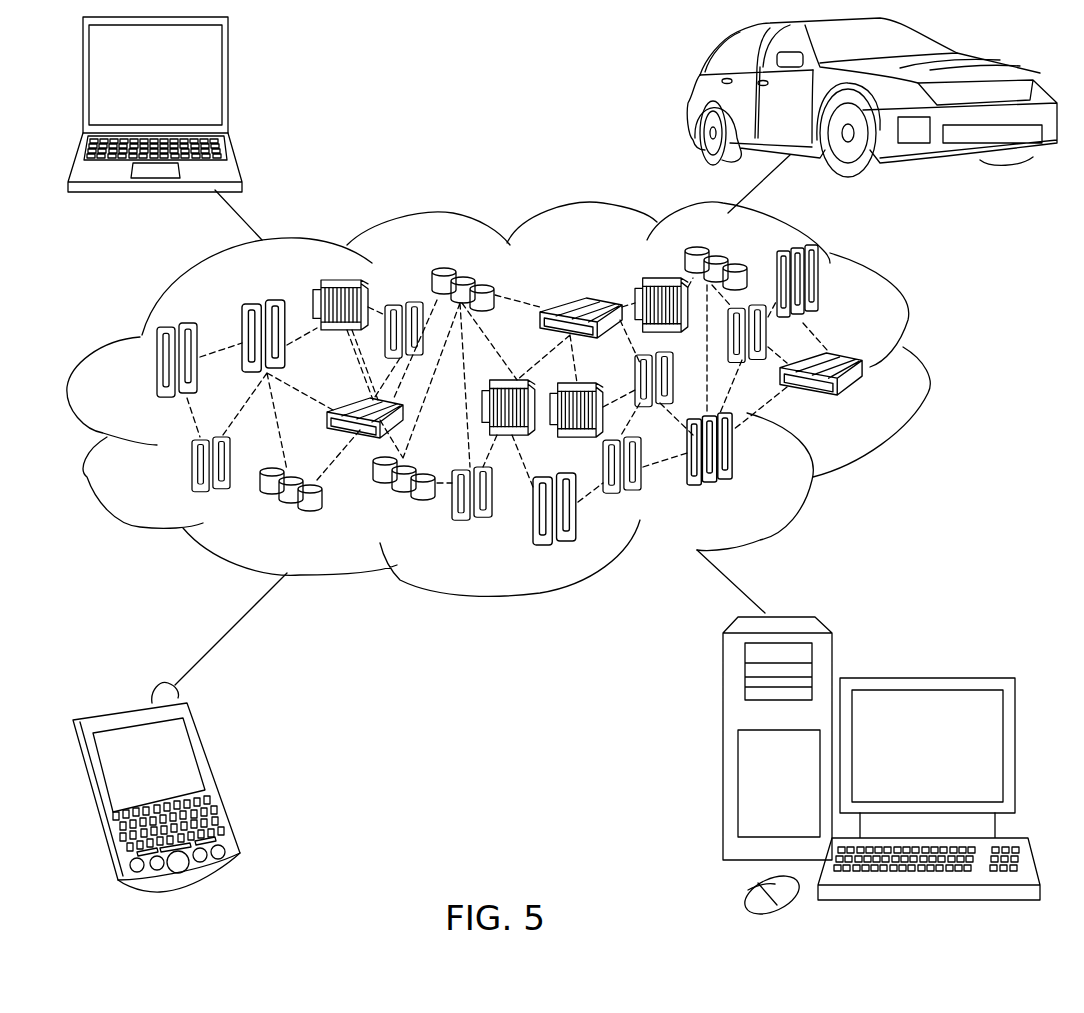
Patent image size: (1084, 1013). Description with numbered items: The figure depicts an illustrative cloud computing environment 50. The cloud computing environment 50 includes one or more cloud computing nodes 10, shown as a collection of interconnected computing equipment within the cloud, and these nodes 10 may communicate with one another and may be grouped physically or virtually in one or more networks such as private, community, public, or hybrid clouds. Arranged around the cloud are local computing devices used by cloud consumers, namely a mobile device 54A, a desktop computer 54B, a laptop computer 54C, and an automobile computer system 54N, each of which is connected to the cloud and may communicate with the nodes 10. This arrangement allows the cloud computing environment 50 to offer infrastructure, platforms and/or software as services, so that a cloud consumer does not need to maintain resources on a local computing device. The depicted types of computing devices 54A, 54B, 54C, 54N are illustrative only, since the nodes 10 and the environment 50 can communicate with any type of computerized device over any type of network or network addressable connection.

The cloud computing nodes 10 is at (870, 404).
The cloud computing environment 50 is at (923, 373).
The mobile device 54A is at (217, 777).
The desktop computer 54B is at (927, 677).
The laptop computer 54C is at (228, 82).
The automobile computer system 54N is at (690, 98).